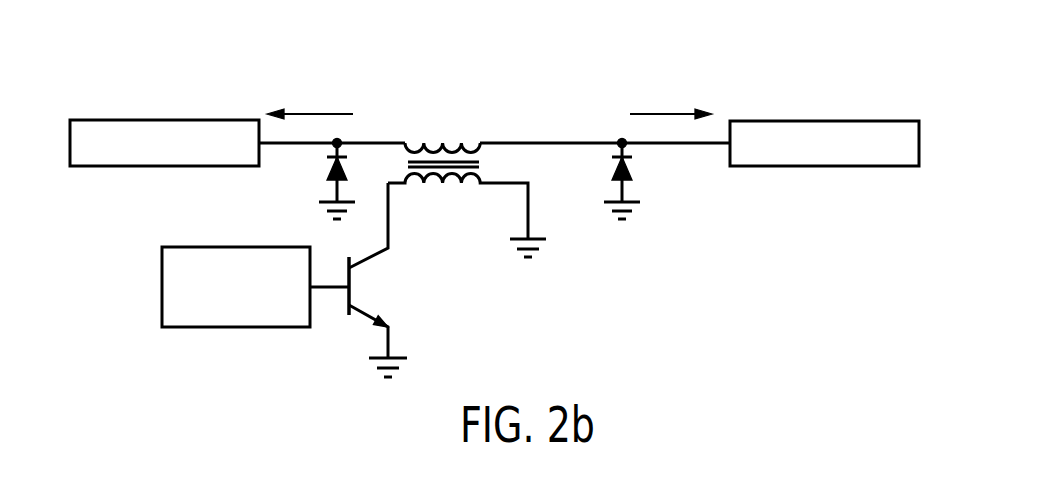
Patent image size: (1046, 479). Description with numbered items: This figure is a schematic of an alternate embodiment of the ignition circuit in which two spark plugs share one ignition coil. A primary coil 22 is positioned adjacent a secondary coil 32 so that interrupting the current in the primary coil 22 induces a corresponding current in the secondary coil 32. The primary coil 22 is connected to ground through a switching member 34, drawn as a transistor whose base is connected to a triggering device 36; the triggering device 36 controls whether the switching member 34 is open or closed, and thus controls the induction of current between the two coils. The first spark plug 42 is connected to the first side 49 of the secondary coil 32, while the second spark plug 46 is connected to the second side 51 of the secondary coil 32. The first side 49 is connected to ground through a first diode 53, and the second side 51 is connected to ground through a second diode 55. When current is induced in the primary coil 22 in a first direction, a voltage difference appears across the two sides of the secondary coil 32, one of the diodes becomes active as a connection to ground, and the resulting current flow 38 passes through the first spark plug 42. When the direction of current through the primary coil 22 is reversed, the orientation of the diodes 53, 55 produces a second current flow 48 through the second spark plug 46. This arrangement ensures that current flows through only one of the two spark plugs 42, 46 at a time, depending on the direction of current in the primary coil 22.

The primary coil 22 is at (483, 181).
The secondary coil 32 is at (472, 142).
The switching member 34 is at (352, 288).
The triggering device 36 is at (233, 246).
The current flow 38 is at (318, 113).
The first spark plug 42 is at (163, 120).
The second spark plug 46 is at (824, 166).
The second current flow 48 is at (665, 114).
The first side of the secondary coil 49 is at (377, 143).
The second side of the secondary coil 51 is at (575, 144).
The first diode 53 is at (327, 176).
The second diode 55 is at (631, 173).